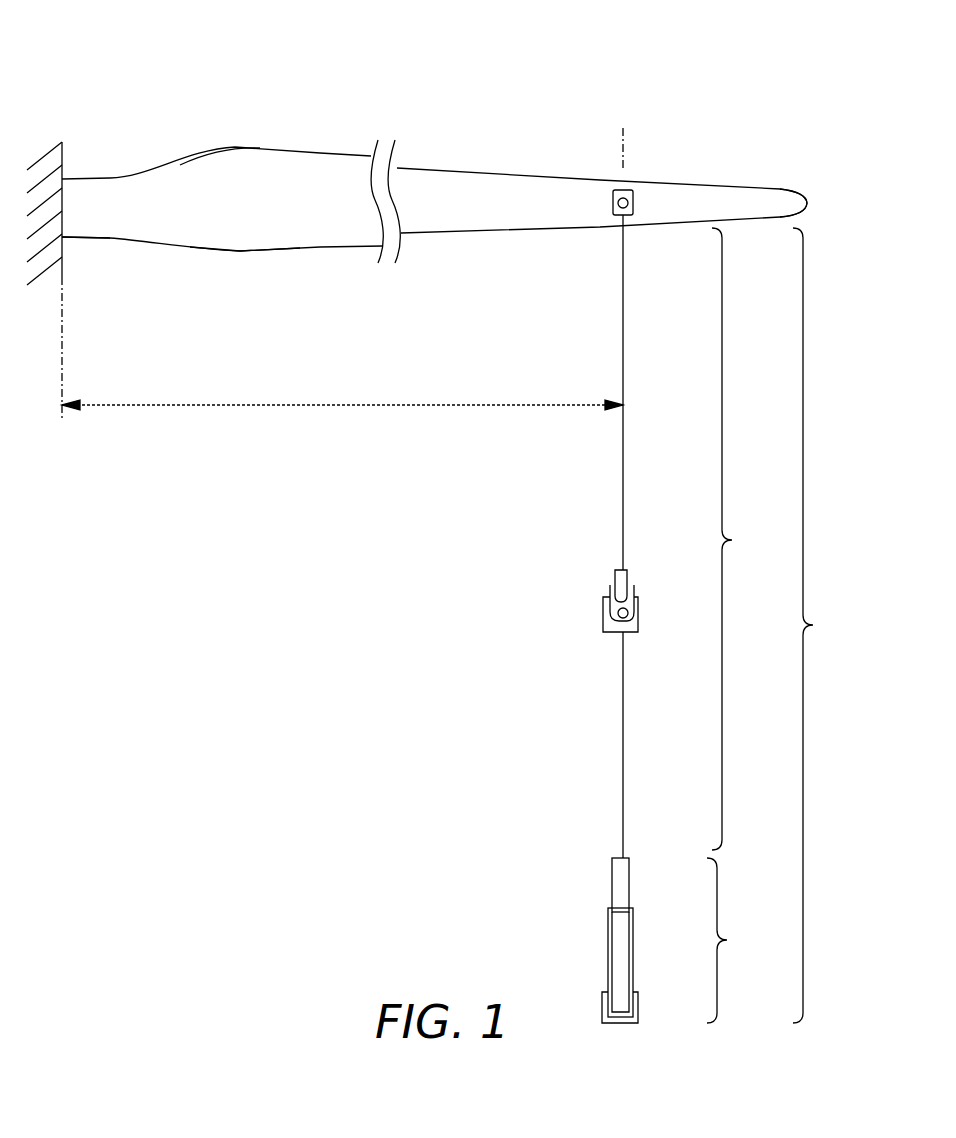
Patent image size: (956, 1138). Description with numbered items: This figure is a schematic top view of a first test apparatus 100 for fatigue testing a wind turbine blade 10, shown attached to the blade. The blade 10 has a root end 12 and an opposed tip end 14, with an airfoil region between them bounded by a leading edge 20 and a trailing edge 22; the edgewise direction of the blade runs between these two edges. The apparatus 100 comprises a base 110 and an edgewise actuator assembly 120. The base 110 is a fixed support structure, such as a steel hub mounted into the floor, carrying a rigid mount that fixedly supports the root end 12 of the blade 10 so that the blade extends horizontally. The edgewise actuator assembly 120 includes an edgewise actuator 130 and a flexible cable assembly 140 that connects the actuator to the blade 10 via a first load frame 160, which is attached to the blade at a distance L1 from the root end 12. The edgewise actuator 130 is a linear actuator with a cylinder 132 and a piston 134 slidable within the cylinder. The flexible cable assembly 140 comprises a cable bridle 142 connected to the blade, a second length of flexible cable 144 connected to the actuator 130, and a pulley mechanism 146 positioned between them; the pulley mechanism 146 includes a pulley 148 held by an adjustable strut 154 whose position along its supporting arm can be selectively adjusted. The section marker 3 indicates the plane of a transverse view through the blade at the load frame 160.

The test apparatus 100 is at (181, 78).
The base 110 is at (63, 145).
The wind turbine blade 10 is at (484, 160).
The root end 12 is at (86, 240).
The tip end 14 is at (810, 202).
The leading edge 20 is at (235, 252).
The trailing edge 22 is at (253, 147).
The section line 3- 3 is at (623, 128).
The distance L1 is at (342, 393).
The first load frame 160 is at (595, 207).
The cable bridle 142 is at (625, 468).
The second length of flexible cable 144 is at (625, 740).
The pulley mechanism 146 is at (600, 597).
The pulley 148 is at (628, 574).
The adjustable strut 154 is at (640, 607).
The edgewise actuator 130 is at (692, 940).
The cylinder 132 is at (634, 948).
The piston 134 is at (630, 878).
The flexible cable assembly 140 is at (747, 539).
The edgewise actuator assembly 120 is at (826, 625).